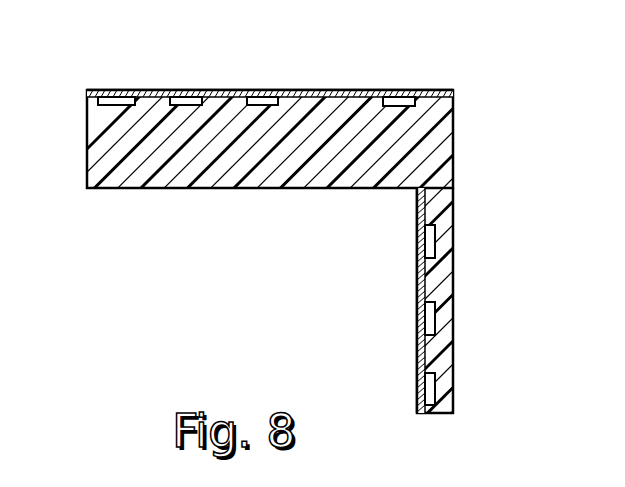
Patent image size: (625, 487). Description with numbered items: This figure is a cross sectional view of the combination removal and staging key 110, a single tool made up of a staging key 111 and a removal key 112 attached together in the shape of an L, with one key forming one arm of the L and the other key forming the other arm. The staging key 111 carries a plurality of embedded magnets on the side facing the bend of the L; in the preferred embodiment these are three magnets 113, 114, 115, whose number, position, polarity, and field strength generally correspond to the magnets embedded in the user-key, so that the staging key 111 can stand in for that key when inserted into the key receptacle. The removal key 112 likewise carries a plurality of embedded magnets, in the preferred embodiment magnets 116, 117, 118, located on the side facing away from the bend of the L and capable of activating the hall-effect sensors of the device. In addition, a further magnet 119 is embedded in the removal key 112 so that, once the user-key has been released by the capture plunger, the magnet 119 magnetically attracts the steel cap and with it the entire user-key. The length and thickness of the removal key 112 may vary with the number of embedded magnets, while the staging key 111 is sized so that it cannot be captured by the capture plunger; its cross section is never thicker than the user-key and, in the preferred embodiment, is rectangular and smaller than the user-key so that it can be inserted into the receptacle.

The combination removal and staging key 110 is at (338, 76).
The staging key 111 is at (473, 277).
The removal key 112 is at (105, 208).
The magnet 113 is at (420, 237).
The magnet 114 is at (420, 313).
The magnet 115 is at (418, 392).
The magnet 116 is at (112, 93).
The magnet 117 is at (183, 93).
The magnet 118 is at (267, 93).
The magnet 119 is at (398, 98).